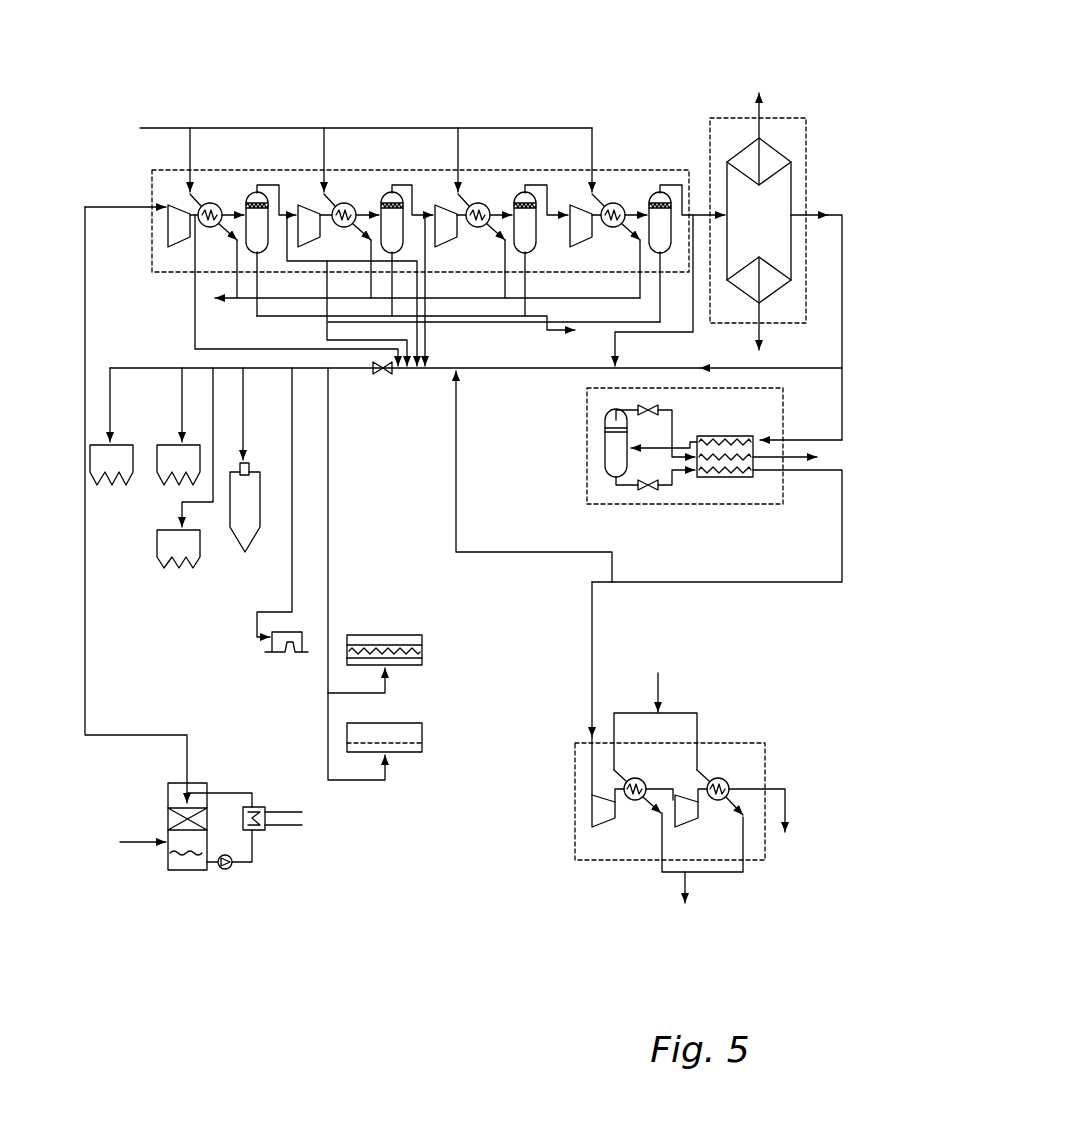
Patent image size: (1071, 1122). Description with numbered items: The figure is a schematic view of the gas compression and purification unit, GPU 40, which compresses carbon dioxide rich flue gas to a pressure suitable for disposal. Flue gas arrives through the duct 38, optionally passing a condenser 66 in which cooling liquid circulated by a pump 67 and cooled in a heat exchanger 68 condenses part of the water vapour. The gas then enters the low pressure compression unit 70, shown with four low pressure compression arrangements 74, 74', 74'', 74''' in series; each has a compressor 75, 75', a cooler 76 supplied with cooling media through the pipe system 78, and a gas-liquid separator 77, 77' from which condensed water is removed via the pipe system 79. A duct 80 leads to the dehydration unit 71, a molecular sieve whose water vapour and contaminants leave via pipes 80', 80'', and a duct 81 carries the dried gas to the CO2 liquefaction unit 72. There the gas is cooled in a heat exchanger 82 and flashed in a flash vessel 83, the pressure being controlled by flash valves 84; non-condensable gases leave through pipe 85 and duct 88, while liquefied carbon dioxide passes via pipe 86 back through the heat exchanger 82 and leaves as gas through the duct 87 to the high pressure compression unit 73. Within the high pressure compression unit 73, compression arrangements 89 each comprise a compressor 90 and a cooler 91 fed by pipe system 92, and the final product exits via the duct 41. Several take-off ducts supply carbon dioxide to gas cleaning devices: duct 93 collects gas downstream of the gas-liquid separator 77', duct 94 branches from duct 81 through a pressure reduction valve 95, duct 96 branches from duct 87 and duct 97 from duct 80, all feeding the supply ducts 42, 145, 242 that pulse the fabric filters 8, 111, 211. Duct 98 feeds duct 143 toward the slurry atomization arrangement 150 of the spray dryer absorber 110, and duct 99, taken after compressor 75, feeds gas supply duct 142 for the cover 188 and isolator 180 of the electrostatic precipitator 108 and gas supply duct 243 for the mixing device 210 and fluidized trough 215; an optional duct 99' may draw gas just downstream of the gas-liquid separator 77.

The gas compression and purification unit 40 is at (444, 62).
The duct 38 is at (133, 207).
The low pressure compression unit 70 is at (538, 166).
The dehydration unit 71 is at (810, 148).
The CO2 liquefaction unit 72 is at (714, 510).
The high pressure compression unit 73 is at (620, 875).
The low pressure compression arrangement 74 is at (194, 137).
The low pressure compression arrangement 74' is at (365, 143).
The low pressure compression arrangement 74'' is at (497, 142).
The low pressure compression arrangement 74''' is at (638, 142).
The compressor 75 is at (172, 166).
The compressor 75' is at (307, 193).
The cooler 76 is at (207, 228).
The gas-liquid separator 77 is at (272, 200).
The gas-liquid separator 77' is at (382, 229).
The pipe system 78 is at (303, 128).
The pipe system 79 is at (500, 318).
The duct 80 is at (647, 185).
The pipe 80' is at (786, 108).
The pipe 80'' is at (778, 303).
The duct 81 is at (842, 330).
The heat exchanger 82 is at (722, 436).
The flash vessel 83 is at (605, 450).
The flash valve 84 is at (636, 408).
The pipe 85 is at (606, 424).
The pipe 86 is at (700, 480).
The duct 87 is at (842, 548).
The duct 88 is at (806, 462).
The high pressure compression arrangement 89 is at (604, 784).
The compressor 90 is at (594, 827).
The cooler 91 is at (641, 784).
The pipe system 92 is at (658, 673).
The duct 93 is at (427, 326).
The duct 94 is at (770, 369).
The pressure reduction valve 95 is at (385, 376).
The duct 96 is at (456, 512).
The duct 97 is at (625, 334).
The duct 98 is at (328, 330).
The duct 99 is at (152, 312).
The duct 99' is at (427, 287).
The duct 143 is at (243, 407).
The duct 42 is at (110, 385).
The duct 145 is at (182, 392).
The fabric filter 8 is at (110, 470).
The fabric filter 111 is at (165, 456).
The spray dryer absorber 110 is at (232, 535).
The duct 242 is at (182, 512).
The fabric filter 211 is at (165, 560).
The slurry atomization arrangement 150 is at (250, 466).
The gas supply duct 142 is at (293, 478).
The gas supply duct 243 is at (329, 513).
The isolator 180 is at (268, 652).
The electrostatic precipitator 108 is at (272, 656).
The cover 188 is at (302, 637).
The mixing device 210 is at (385, 633).
The fluidized trough 215 is at (400, 755).
The condenser 66 is at (168, 800).
The pump 67 is at (225, 870).
The heat exchanger 68 is at (258, 832).
The duct 41 is at (786, 800).